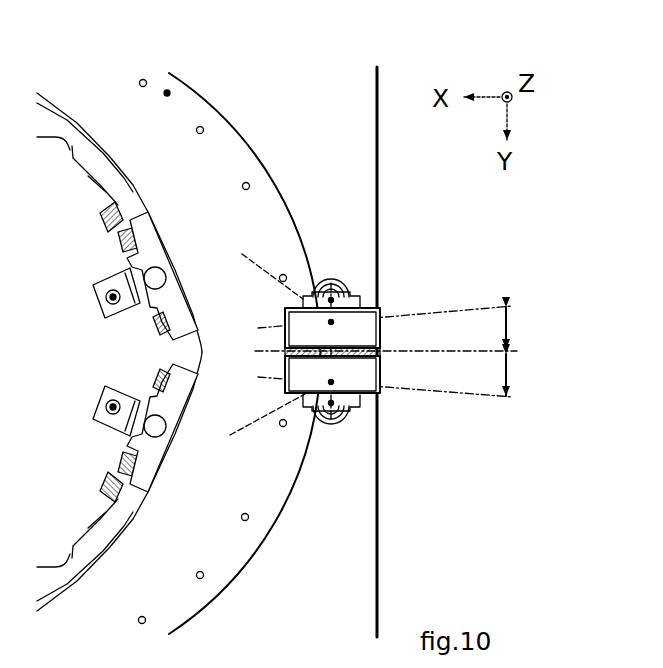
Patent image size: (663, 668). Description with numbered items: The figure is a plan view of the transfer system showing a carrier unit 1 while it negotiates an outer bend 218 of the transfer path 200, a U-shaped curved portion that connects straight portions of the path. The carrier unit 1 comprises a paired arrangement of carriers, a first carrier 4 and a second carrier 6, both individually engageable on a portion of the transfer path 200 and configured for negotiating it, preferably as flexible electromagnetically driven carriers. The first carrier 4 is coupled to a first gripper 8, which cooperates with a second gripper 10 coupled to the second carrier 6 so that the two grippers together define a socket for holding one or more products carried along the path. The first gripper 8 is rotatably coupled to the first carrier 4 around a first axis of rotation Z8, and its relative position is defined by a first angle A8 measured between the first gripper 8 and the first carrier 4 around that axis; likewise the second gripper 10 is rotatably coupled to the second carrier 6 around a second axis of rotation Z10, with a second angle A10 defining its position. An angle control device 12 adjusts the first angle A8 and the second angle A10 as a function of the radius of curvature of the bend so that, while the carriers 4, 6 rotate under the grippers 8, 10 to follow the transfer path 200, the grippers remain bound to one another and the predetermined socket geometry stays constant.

The transfer path 200 is at (229, 146).
The outer bend 218 is at (168, 91).
The carrier unit 1 is at (357, 277).
The second carrier 6 is at (365, 289).
The angle control device 12 is at (391, 297).
The second gripper 10 is at (367, 330).
The first gripper 8 is at (371, 373).
The first carrier 4 is at (364, 414).
The second angle A10 is at (510, 323).
The first angle A8 is at (508, 377).
The second axis of rotation Z10 is at (249, 265).
The first axis of rotation Z8 is at (252, 425).